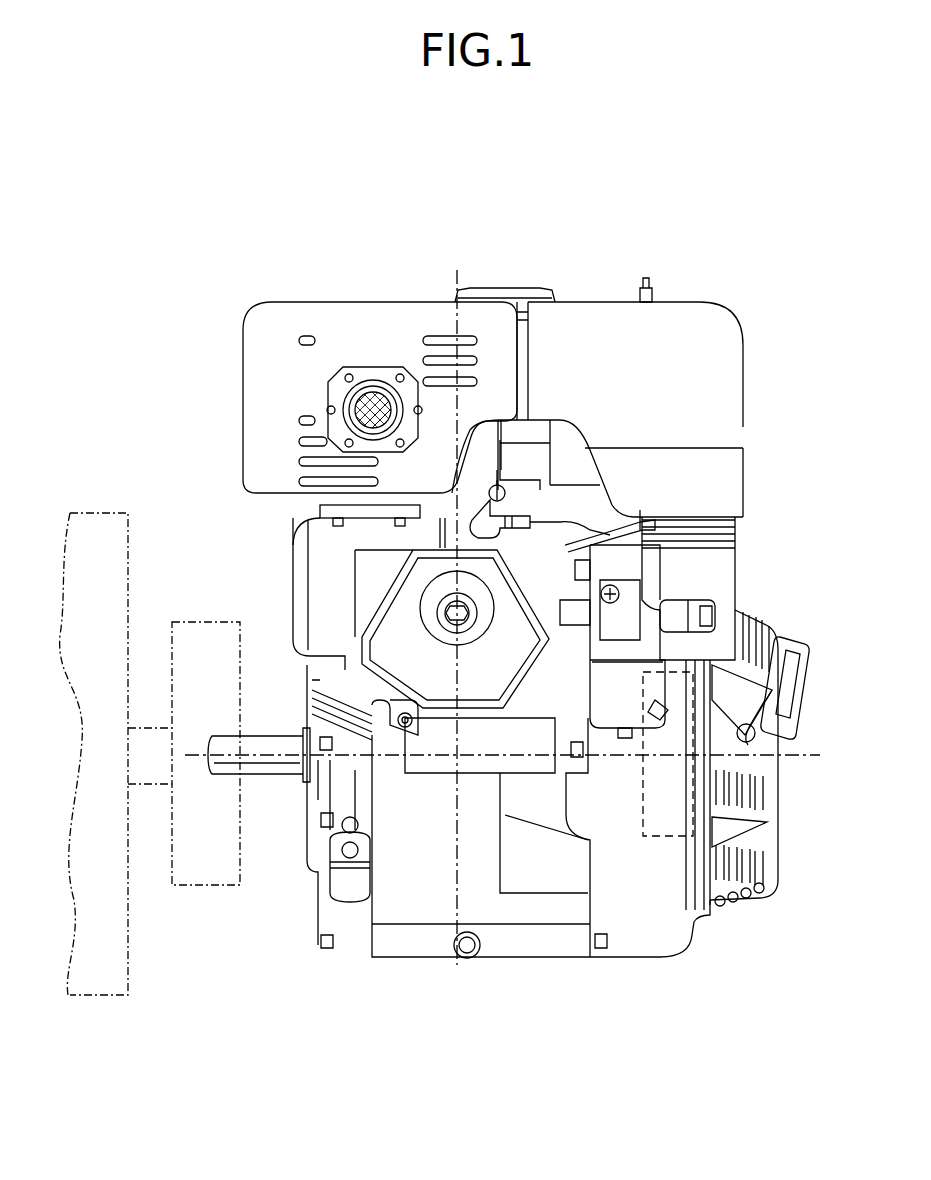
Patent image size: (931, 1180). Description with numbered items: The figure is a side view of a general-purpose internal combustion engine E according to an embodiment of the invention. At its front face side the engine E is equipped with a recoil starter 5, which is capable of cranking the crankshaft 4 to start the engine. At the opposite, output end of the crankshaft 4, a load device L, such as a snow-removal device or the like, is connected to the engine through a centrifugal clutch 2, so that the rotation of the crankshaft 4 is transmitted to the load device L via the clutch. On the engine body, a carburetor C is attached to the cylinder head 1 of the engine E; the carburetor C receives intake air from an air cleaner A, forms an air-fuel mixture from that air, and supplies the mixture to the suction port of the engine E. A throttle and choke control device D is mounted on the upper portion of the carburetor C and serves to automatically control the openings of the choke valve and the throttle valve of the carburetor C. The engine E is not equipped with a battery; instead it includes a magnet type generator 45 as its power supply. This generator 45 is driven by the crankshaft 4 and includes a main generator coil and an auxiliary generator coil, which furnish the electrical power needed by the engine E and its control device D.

The cylinder head 1 is at (372, 583).
The centrifugal clutch 2 is at (202, 636).
The crankshaft 4 is at (281, 770).
The recoil starter 5 is at (778, 634).
The magnet type generator 45 is at (668, 837).
The air cleaner A is at (640, 380).
The carburetor C is at (607, 696).
The throttle and choke control device D is at (620, 528).
The general-purpose internal combustion engine E is at (510, 630).
The load device L is at (103, 528).